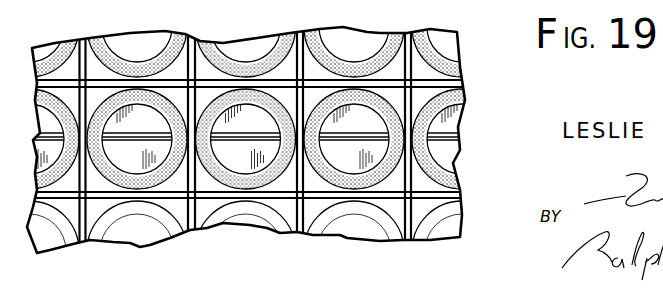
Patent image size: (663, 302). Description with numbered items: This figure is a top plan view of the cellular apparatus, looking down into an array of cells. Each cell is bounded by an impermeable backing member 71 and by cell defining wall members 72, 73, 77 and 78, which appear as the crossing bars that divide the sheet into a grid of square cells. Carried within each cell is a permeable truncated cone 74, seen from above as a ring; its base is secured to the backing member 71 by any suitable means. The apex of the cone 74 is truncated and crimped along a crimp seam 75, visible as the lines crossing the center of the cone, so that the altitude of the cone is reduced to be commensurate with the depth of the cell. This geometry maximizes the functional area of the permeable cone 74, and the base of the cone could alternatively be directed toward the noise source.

The impermeable backing member 71 is at (247, 0).
The cell defining wall member 72 is at (204, 73).
The cell defining wall member 73 is at (195, 238).
The truncated cone 74 is at (254, 166).
The crimp seam 75 is at (262, 132).
The cell defining wall member 77 is at (213, 226).
The cell defining wall member 78 is at (303, 237).